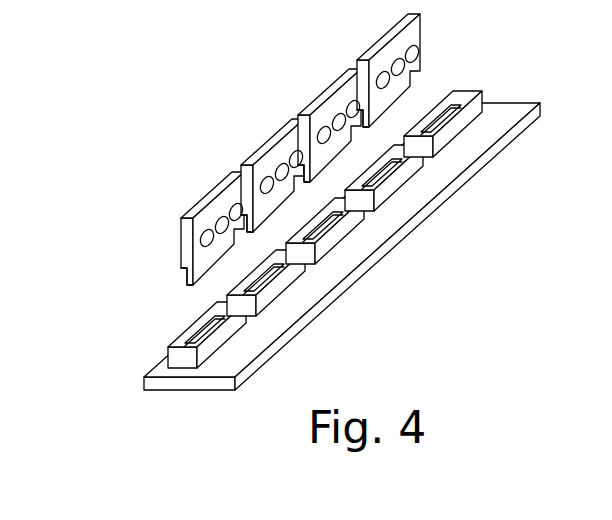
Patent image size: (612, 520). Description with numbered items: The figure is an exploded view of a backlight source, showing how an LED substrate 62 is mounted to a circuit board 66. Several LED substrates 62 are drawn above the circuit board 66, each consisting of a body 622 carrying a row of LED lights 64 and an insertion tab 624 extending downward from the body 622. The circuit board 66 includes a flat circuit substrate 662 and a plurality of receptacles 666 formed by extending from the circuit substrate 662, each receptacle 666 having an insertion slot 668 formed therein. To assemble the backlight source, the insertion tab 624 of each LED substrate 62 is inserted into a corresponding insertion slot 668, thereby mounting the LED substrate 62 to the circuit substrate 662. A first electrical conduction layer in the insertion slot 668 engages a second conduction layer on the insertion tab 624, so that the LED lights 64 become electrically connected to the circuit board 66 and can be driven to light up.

The LED substrate 62 is at (219, 149).
The body 622 is at (210, 203).
The insertion tab 624 is at (187, 277).
The LED lights 64 is at (238, 210).
The circuit board 66 is at (272, 273).
The circuit substrate 662 is at (186, 388).
The receptacle 666 is at (262, 229).
The insertion slot 668 is at (222, 312).